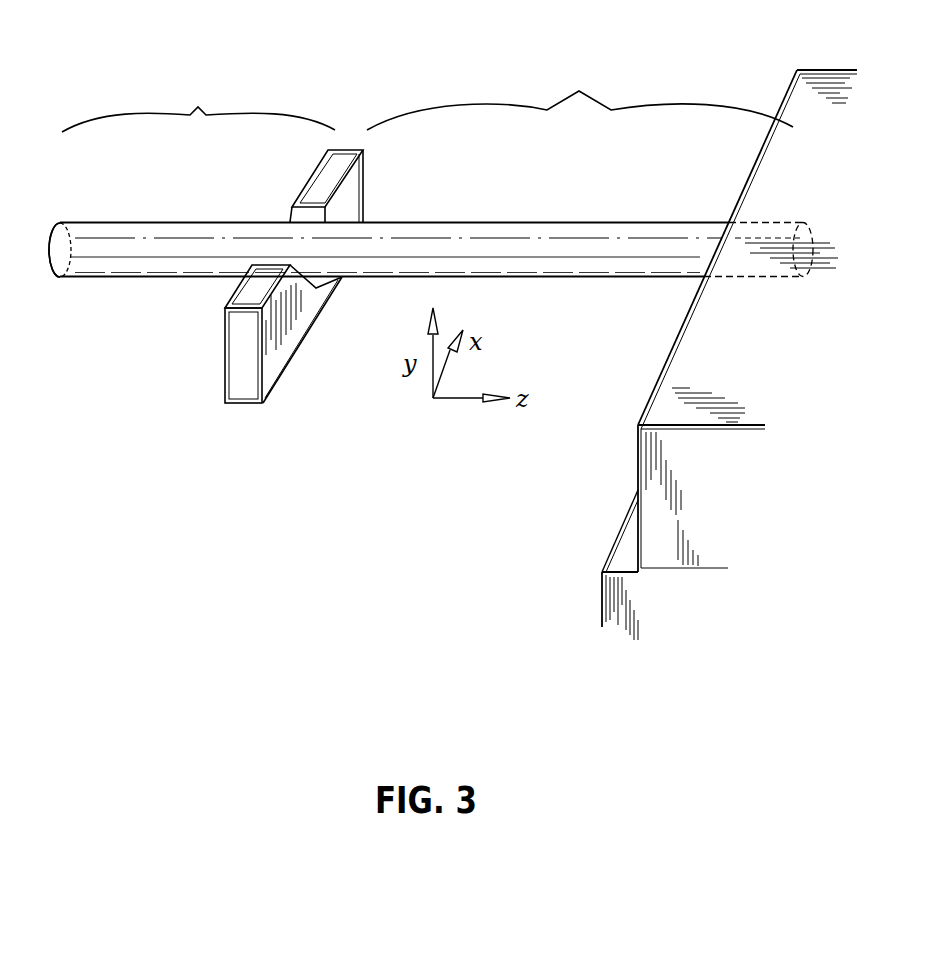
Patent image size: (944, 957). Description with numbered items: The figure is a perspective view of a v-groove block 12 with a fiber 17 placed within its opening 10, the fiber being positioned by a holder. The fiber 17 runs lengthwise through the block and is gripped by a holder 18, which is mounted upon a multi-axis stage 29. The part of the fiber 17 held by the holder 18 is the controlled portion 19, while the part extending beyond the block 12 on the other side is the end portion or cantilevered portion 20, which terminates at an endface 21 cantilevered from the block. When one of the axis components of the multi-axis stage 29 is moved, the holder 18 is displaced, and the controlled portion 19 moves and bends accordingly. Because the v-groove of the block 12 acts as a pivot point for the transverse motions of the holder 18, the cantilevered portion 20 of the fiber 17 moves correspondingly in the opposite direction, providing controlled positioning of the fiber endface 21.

The opening 10 is at (310, 217).
The v-groove block 12 is at (271, 358).
The fiber 17 is at (493, 248).
The holder 18 is at (663, 522).
The controlled portion 19 is at (580, 97).
The cantilevered portion 20 is at (198, 105).
The endface 21 is at (47, 262).
The multi-axis stage 29 is at (635, 600).